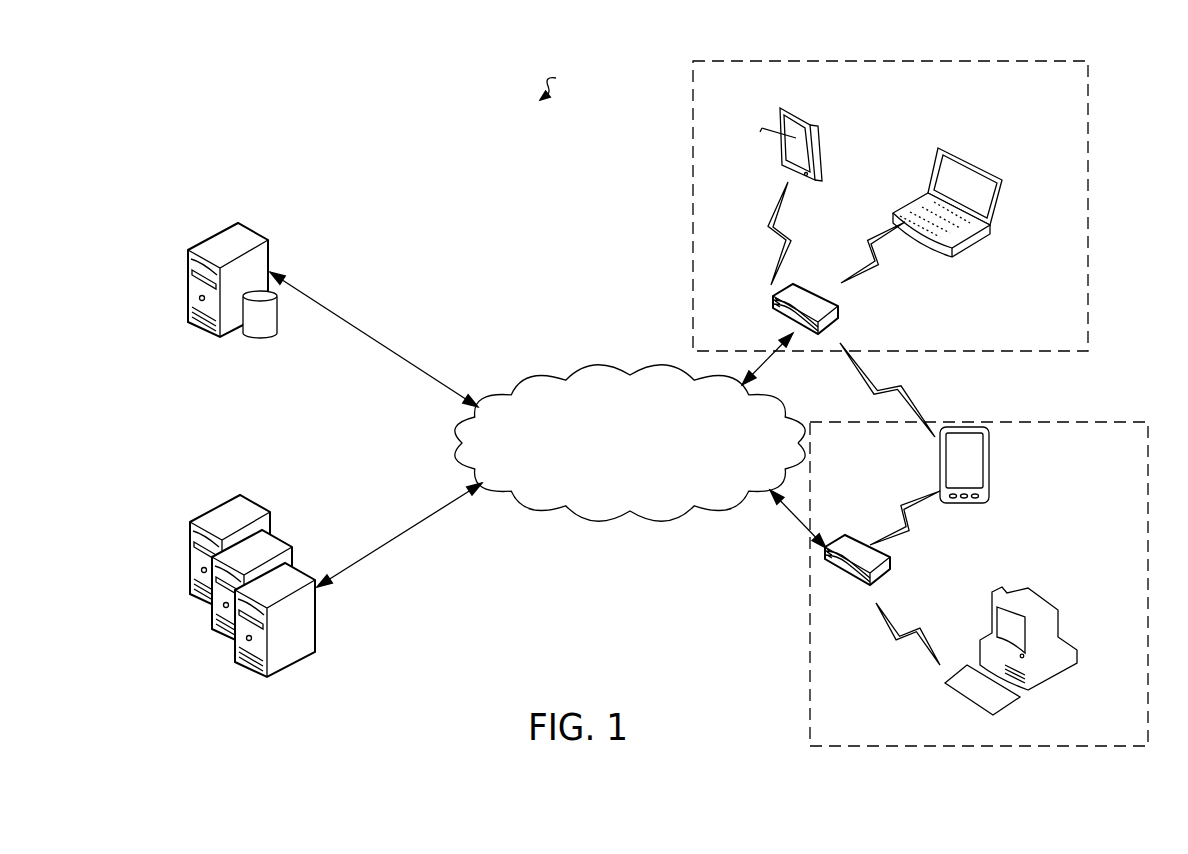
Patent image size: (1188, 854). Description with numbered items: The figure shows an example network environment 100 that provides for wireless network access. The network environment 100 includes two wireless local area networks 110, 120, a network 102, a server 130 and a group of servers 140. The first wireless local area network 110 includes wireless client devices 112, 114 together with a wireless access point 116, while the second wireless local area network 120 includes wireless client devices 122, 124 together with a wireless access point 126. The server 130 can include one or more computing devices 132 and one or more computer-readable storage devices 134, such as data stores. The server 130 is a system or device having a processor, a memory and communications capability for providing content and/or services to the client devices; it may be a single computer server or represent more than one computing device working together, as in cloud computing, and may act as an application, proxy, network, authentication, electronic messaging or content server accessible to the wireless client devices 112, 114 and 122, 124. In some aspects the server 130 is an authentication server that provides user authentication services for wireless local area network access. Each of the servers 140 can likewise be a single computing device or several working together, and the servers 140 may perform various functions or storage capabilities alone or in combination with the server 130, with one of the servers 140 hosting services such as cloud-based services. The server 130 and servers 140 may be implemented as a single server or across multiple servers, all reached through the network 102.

The network environment 100 is at (565, 84).
The network 102 is at (630, 431).
The wireless local area network 110 is at (890, 184).
The wireless client device 112 is at (823, 139).
The wireless client device 114 is at (972, 193).
The wireless access point 116 is at (841, 309).
The wireless local area network 120 is at (979, 544).
The wireless client device 122 is at (999, 465).
The wireless client device 124 is at (1037, 643).
The wireless access point 126 is at (896, 555).
The server 130 is at (266, 285).
The computing device 132 is at (257, 267).
The computer-readable storage device 134 is at (294, 332).
The servers 140 is at (208, 654).